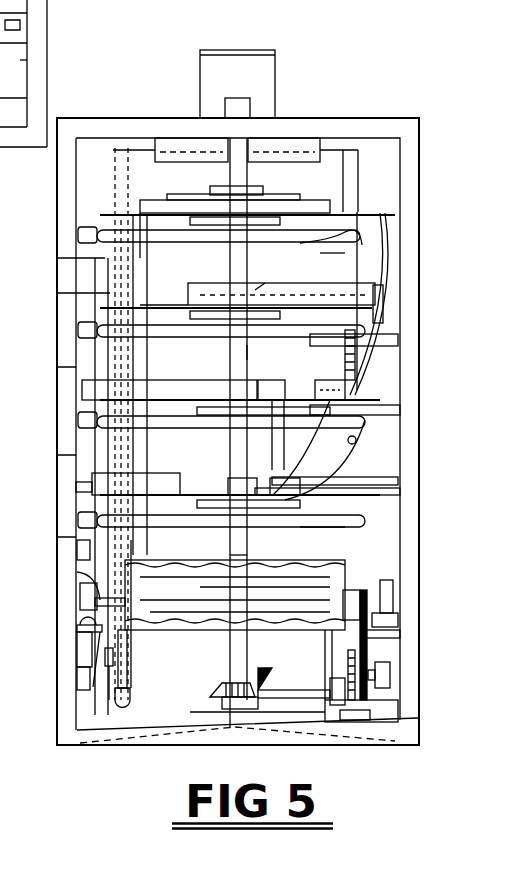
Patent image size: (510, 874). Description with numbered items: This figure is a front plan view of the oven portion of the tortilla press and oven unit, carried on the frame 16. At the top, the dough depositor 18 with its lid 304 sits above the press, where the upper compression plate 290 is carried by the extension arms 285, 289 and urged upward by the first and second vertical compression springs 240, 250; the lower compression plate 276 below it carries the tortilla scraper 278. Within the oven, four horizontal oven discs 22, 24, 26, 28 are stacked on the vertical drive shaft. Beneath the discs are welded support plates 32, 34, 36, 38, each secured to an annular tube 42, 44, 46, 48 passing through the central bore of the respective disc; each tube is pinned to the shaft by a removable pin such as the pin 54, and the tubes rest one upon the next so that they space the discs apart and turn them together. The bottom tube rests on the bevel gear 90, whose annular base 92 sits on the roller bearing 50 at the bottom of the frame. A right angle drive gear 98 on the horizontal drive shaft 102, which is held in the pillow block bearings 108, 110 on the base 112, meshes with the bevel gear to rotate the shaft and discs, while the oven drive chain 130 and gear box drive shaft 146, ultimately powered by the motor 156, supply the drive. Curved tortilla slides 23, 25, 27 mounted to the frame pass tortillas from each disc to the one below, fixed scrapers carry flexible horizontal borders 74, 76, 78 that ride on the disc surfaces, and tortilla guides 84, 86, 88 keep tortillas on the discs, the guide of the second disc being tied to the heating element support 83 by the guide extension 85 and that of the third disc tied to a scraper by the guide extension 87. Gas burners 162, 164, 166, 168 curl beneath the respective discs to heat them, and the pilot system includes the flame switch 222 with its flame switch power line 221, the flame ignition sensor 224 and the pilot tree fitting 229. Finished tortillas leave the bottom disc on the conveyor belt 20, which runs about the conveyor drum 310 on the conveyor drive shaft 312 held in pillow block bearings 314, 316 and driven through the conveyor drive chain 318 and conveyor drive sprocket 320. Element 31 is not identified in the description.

The frame 16 is at (420, 183).
The dough depositor 18 is at (275, 75).
The lid 304 is at (203, 53).
The upper compression plate 290 is at (175, 143).
The extension arm 285 is at (330, 148).
The extension arm 289 is at (122, 152).
The annular tube 42 is at (247, 282).
The second vertical compression spring 250 is at (112, 298).
The support plate 32 is at (192, 222).
The tortilla scraper 278 is at (272, 190).
The lower compression plate 276 is at (322, 190).
The oven disc 22 is at (140, 213).
The flame switch 222 is at (136, 249).
The support plate 34 is at (197, 318).
The oven disc 24 is at (158, 307).
The guide extension 85 is at (383, 298).
The curved tortilla slide 23 is at (335, 253).
The tortilla guide 84 is at (262, 286).
The gas burner 162 is at (303, 285).
The gas burner 164 is at (194, 340).
The heating element support 83 is at (392, 340).
The curved tortilla slide 25 is at (386, 368).
The flexible horizontal border 74 is at (357, 272).
The oven disc 26 is at (182, 392).
The support plate 36 is at (262, 386).
The flexible horizontal border 76 is at (322, 380).
The annular tube 44 is at (247, 349).
The first vertical compression spring 240 is at (400, 411).
The tortilla guide 86 is at (106, 380).
The guide extension 87 is at (290, 446).
The support plate 38 is at (308, 497).
The curved tortilla slide 27 is at (345, 459).
The gas burner 166 is at (184, 438).
The flexible horizontal border 78 is at (218, 458).
The annular tube 46 is at (238, 463).
The oven disc 28 is at (188, 492).
The tortilla guide 88 is at (113, 470).
The conveyor belt 20 is at (212, 556).
The annular tube 48 is at (228, 550).
The gas burner 168 is at (308, 526).
The oven drive chain 130 is at (345, 617).
The gear box drive shaft 146 is at (372, 590).
The conveyor drive sprocket 320 is at (355, 555).
The pillow block bearing 316 is at (395, 592).
The conveyor drive chain 318 is at (375, 646).
The pillow block bearing 110 is at (390, 665).
The base 112 is at (392, 712).
The pillow block bearing 108 is at (331, 686).
The horizontal drive shaft 102 is at (307, 672).
The right angle drive gear 98 is at (271, 670).
The bevel gear 90 is at (213, 687).
The annular base 92 is at (223, 700).
The conveyor drive shaft 312 is at (78, 567).
The pillow block bearing 314 is at (86, 593).
The conveyor drum 310 is at (97, 606).
The flame switch power line 221 is at (103, 657).
The flame ignition sensor 224 is at (110, 670).
The pilot tree fitting 229 is at (126, 706).
The roller bearing 50 is at (235, 729).
The adjacent figure part 31 is at (43, 73).
The removable pin 54 is at (12, 76).
The motor 156 is at (0, 97).